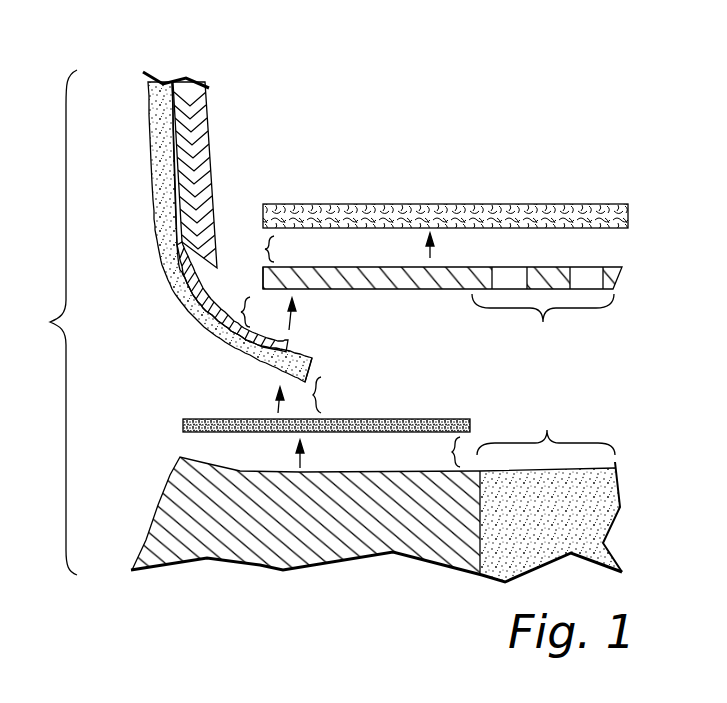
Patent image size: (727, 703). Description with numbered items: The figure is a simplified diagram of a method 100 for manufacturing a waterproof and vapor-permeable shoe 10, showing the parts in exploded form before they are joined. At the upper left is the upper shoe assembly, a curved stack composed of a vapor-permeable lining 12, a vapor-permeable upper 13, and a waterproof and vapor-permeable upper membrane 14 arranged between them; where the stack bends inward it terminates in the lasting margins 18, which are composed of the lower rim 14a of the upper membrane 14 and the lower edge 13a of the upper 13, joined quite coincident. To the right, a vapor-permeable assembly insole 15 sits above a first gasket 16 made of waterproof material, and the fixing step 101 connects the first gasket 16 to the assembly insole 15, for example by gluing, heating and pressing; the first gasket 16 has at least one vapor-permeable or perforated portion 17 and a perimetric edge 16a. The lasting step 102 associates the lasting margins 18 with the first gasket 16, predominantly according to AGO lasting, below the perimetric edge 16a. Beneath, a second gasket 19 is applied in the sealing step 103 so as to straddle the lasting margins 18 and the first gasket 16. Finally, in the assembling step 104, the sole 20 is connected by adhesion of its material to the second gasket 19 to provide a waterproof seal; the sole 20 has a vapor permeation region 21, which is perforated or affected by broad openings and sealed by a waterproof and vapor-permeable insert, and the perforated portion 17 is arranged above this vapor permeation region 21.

The waterproof and vapor-permeable shoe 10 is at (46, 322).
The vapor-permeable lining 12 is at (218, 122).
The vapor-permeable upper 13 is at (140, 103).
The lower edge of the upper 13a is at (311, 368).
The waterproof and vapor-permeable upper membrane 14 is at (178, 66).
The lower rim of the upper membrane 14a is at (302, 348).
The vapor-permeable assembly insole 15 is at (565, 193).
The first gasket 16 is at (570, 255).
The perimetric edge of the first gasket 16a is at (260, 266).
The vapor-permeable or perforated portion 17 is at (543, 314).
The lasting margins 18 is at (246, 378).
The second gasket 19 is at (182, 428).
The sole 20 is at (356, 525).
The vapor permeation region 21 is at (549, 488).
The method for manufacturing a waterproof and vapor-permeable shoe 100 is at (548, 118).
The fixing 101 is at (430, 256).
The lasting 102 is at (288, 321).
The sealing 103 is at (276, 399).
The assembling 104 is at (292, 457).